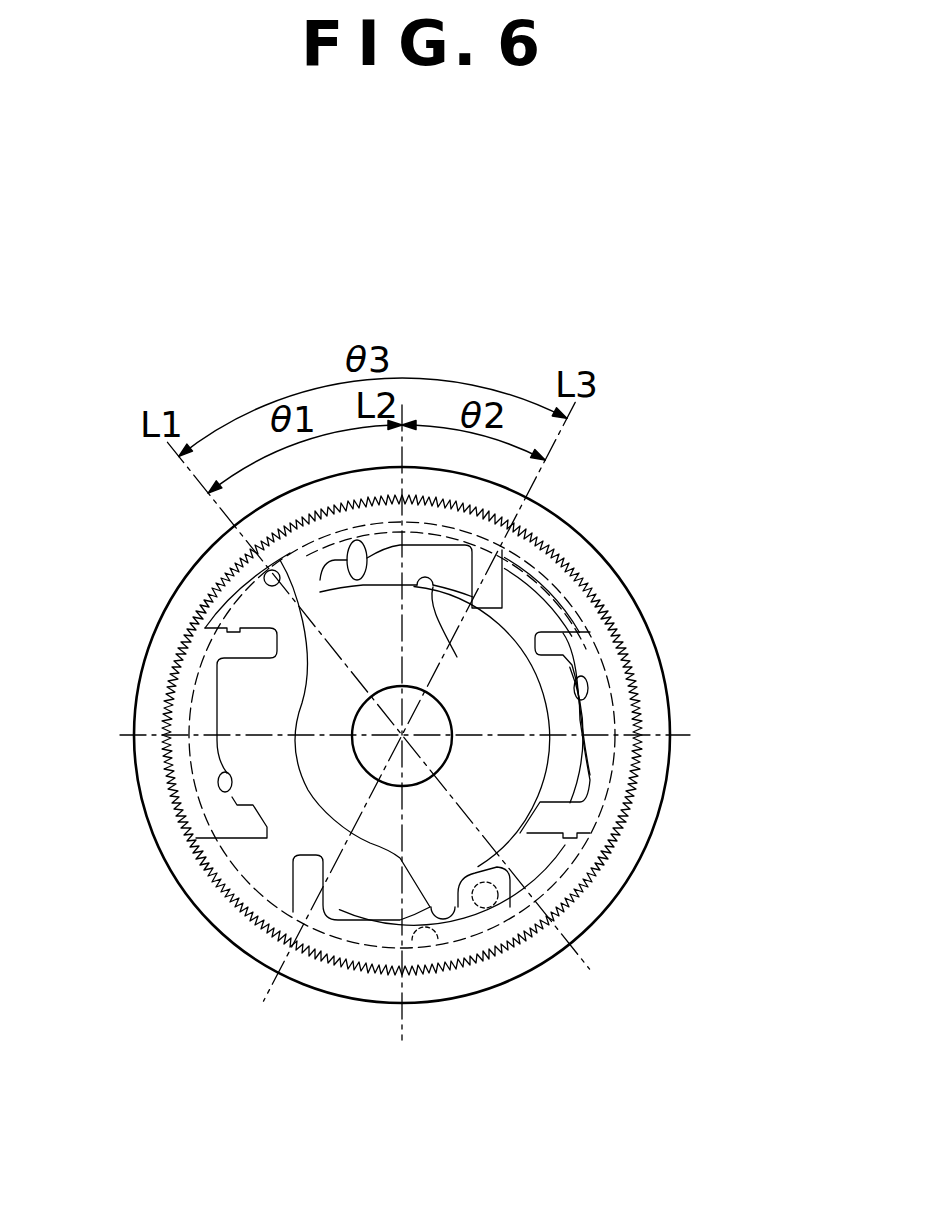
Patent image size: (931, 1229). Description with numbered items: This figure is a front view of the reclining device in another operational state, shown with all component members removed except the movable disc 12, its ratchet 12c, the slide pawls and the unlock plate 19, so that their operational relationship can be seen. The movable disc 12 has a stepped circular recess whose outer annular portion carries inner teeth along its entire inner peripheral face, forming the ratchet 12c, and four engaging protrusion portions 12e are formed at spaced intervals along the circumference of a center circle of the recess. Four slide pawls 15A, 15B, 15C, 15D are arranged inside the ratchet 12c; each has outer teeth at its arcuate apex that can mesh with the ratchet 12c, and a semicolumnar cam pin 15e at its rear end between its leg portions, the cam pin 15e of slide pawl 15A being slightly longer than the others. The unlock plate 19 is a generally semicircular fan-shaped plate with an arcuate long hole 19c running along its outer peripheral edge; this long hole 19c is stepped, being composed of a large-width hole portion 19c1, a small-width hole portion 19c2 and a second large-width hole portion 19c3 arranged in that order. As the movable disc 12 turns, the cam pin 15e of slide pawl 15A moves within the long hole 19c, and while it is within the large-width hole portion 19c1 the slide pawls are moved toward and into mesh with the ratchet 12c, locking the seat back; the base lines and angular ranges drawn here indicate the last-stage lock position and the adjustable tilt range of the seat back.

The movable disc 12 is at (615, 898).
The ratchet 12c is at (237, 898).
The engaging protrusion portion 12e is at (265, 574).
The slide pawl 15A is at (504, 556).
The slide pawl 15B is at (212, 628).
The slide pawl 15C is at (291, 917).
The slide pawl 15D is at (590, 624).
The cam pin 15e is at (350, 565).
The unlock plate 19 is at (297, 698).
The long hole 19c is at (433, 590).
The large-width hole portion 19c1 is at (530, 607).
The small-width hole portion 19c2 is at (563, 772).
The large-width hole portion 19c3 is at (537, 907).